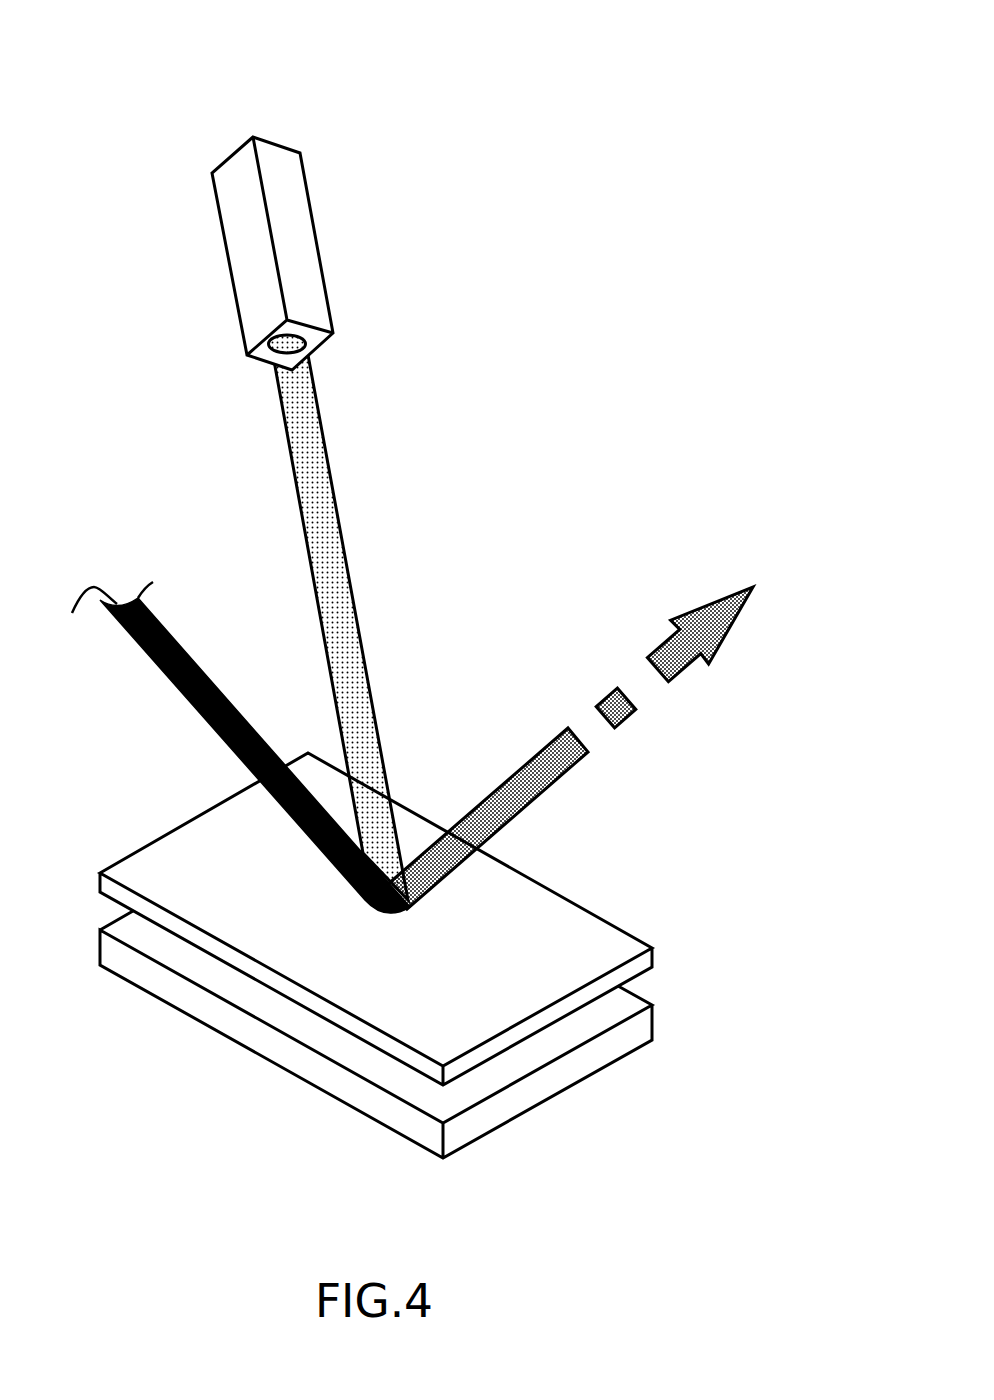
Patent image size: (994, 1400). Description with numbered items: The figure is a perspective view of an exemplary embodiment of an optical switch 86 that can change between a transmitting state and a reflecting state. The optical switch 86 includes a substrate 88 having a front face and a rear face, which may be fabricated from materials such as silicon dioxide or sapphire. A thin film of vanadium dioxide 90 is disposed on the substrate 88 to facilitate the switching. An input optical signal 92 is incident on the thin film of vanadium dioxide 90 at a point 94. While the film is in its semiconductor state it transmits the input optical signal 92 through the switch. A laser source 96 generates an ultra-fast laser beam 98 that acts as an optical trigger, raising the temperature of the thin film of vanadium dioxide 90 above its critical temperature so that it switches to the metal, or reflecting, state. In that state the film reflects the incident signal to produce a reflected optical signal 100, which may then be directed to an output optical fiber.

The optical switch 86 is at (703, 75).
The substrate 88 is at (332, 1078).
The thin film of vanadium dioxide 90 is at (283, 983).
The input optical signal 92 is at (207, 672).
The point 94 is at (400, 917).
The laser source 96 is at (318, 243).
The ultra-fast laser beam 98 is at (340, 520).
The reflected optical signal 100 is at (542, 747).